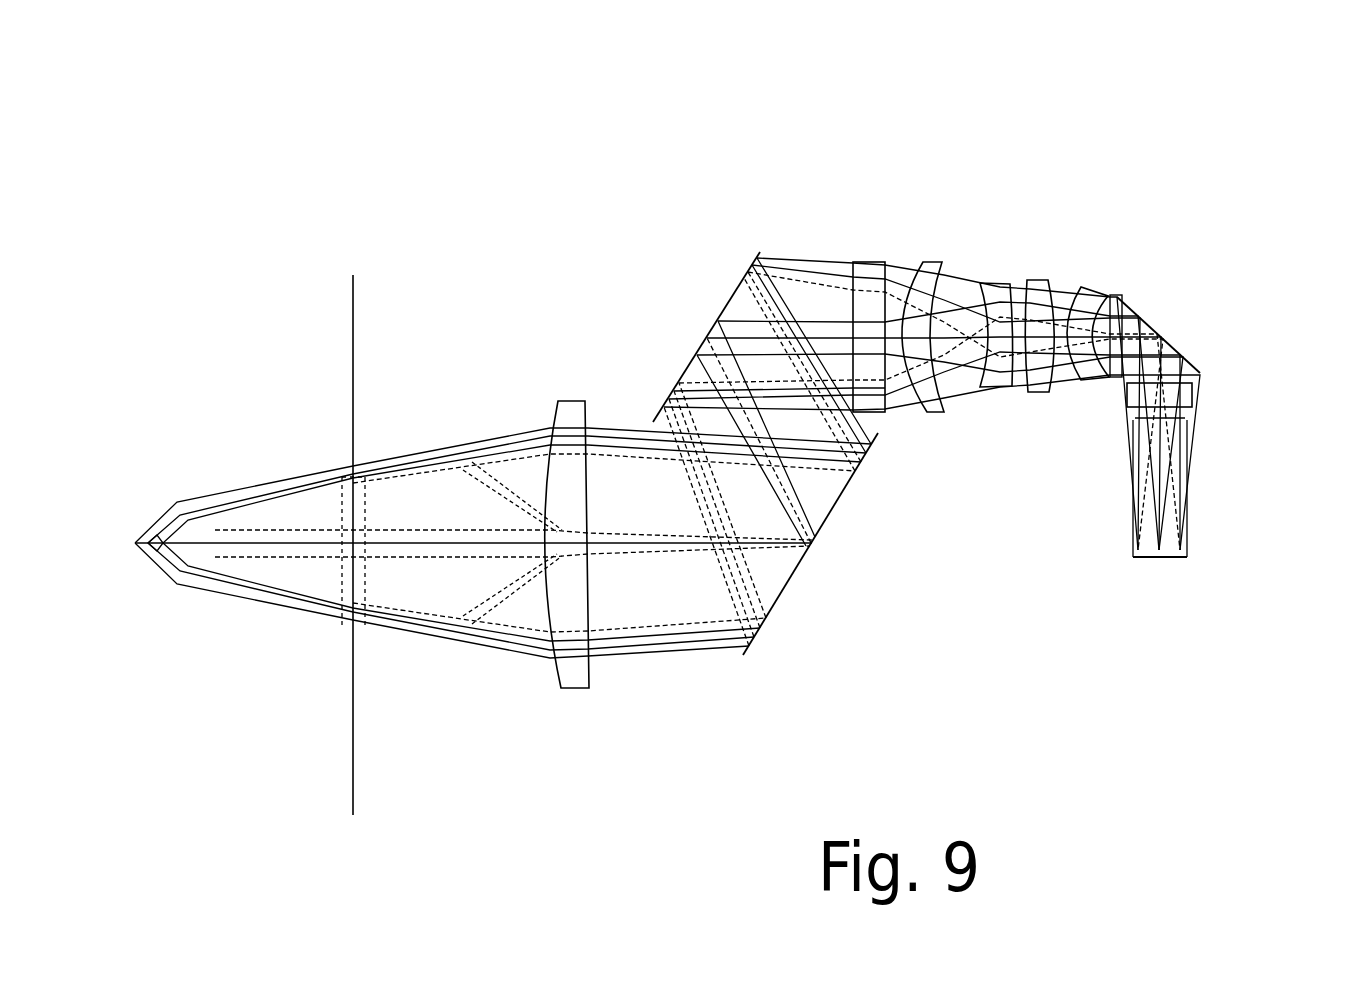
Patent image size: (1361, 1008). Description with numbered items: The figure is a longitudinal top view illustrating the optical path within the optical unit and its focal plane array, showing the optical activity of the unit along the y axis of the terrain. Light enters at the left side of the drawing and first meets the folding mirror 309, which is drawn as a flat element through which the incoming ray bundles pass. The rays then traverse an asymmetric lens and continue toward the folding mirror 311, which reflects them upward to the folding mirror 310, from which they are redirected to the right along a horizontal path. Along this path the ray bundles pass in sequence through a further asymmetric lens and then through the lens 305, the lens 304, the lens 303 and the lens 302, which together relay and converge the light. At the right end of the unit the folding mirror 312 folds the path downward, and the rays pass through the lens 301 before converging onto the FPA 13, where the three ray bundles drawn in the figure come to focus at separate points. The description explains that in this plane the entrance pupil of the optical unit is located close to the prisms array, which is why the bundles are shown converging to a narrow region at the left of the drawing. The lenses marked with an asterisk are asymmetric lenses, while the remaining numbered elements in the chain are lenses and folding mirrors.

The folding mirror 309 is at (349, 325).
The folding mirror 310 is at (735, 290).
The folding mirror 311 is at (803, 567).
The lens 305 is at (930, 255).
The lens 304 is at (991, 388).
The lens 303 is at (1027, 278).
The lens 302 is at (1097, 282).
The folding mirror 312 is at (1165, 343).
The lens 301 is at (1190, 395).
The FPA (focal plane array) 13 is at (1158, 560).